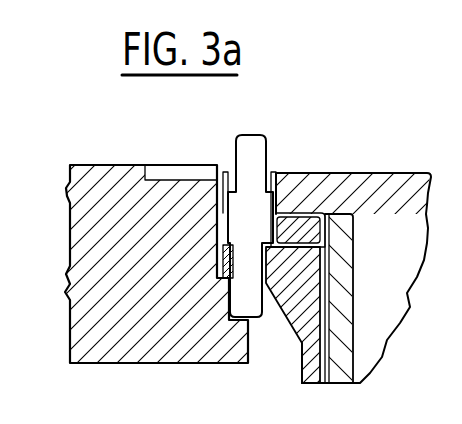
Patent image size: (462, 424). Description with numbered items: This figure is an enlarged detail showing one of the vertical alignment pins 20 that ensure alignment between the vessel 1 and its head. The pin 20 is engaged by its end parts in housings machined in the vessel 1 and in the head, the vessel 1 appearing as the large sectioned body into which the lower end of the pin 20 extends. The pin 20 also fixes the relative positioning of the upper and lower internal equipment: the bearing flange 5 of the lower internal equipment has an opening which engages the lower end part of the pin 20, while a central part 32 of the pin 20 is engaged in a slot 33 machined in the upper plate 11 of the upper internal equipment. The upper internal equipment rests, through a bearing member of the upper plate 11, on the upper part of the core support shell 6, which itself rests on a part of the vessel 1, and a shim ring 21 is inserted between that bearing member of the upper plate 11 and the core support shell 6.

The vessel 1 is at (115, 297).
The bearing flange 5 is at (287, 314).
The core support shell 6 is at (307, 358).
The upper plate 11 is at (338, 292).
The alignment pin 20 is at (268, 133).
The shim ring 21 is at (310, 236).
The central part 32 is at (242, 224).
The slot 33 is at (286, 181).